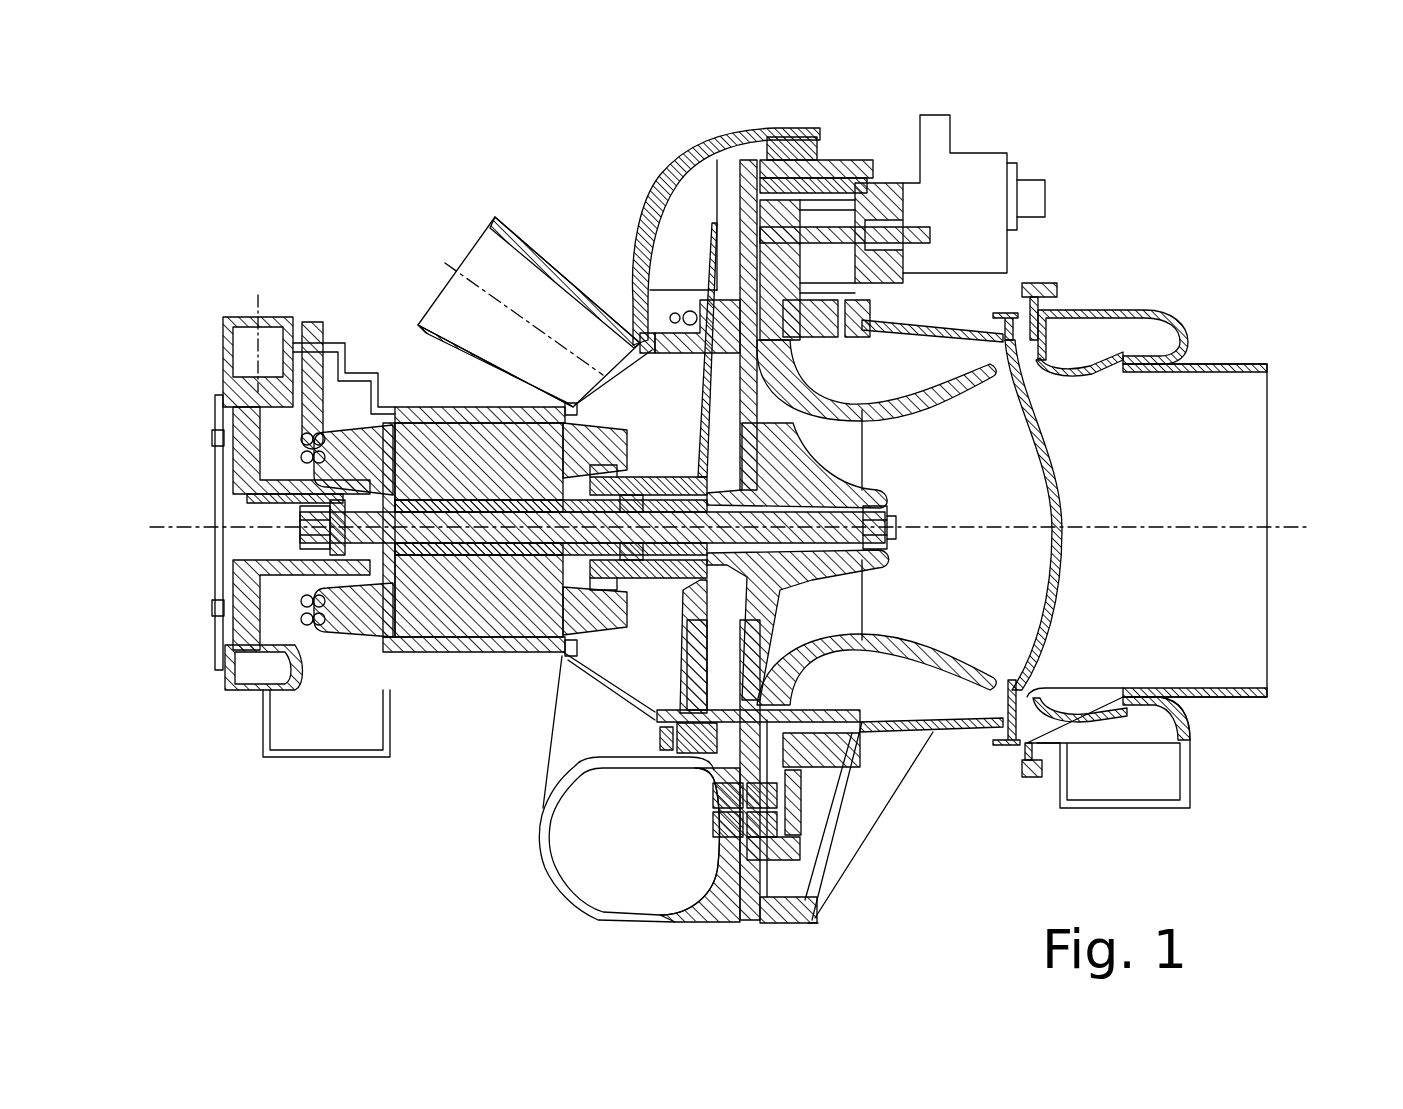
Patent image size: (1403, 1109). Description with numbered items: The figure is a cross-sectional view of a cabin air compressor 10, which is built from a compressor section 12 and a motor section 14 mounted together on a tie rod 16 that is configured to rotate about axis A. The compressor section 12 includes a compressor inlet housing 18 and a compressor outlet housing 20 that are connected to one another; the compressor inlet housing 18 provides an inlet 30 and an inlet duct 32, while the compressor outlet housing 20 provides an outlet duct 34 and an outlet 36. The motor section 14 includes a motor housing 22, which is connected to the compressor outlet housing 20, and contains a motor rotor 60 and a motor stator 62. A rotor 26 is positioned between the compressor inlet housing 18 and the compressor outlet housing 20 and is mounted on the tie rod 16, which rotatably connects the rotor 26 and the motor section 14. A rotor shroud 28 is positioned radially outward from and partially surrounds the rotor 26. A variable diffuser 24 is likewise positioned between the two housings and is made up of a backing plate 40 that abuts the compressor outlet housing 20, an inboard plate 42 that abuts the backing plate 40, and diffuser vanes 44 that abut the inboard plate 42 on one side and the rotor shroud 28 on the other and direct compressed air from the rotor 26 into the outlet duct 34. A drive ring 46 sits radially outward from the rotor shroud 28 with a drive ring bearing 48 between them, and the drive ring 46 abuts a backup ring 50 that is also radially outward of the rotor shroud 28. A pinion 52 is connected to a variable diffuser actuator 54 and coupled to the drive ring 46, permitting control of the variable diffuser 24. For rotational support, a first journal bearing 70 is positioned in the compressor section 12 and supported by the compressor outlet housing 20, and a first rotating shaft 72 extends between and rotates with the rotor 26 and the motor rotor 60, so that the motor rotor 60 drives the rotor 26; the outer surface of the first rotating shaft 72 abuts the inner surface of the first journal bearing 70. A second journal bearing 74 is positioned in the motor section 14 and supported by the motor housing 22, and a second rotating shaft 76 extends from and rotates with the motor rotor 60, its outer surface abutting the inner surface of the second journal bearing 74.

The cabin air compressor 10 is at (194, 113).
The compressor section 12 is at (1168, 120).
The motor section 14 is at (303, 464).
The tie rod 16 is at (540, 548).
The compressor inlet housing 18 is at (1140, 350).
The compressor outlet housing 20 is at (668, 163).
The motor housing 22 is at (402, 405).
The variable diffuser 24 is at (826, 873).
The rotor 26 is at (780, 585).
The rotor shroud 28 is at (905, 425).
The inlet 30 is at (1270, 440).
The inlet duct 32 is at (1168, 466).
The outlet duct 34 is at (708, 212).
The outlet 36 is at (597, 850).
The backing plate 40 is at (723, 765).
The inboard plate 42 is at (728, 792).
The diffuser vanes 44 is at (748, 890).
The drive ring 46 is at (800, 826).
The drive ring bearing 48 is at (838, 778).
The backup ring 50 is at (843, 751).
The pinion 52 is at (830, 225).
The variable diffuser actuator 54 is at (978, 168).
The motor rotor 60 is at (415, 652).
The motor stator 62 is at (468, 597).
The first journal bearing 70 is at (650, 480).
The first rotating shaft 72 is at (625, 592).
The second journal bearing 74 is at (285, 486).
The second rotating shaft 76 is at (282, 500).
The axis A is at (1300, 527).